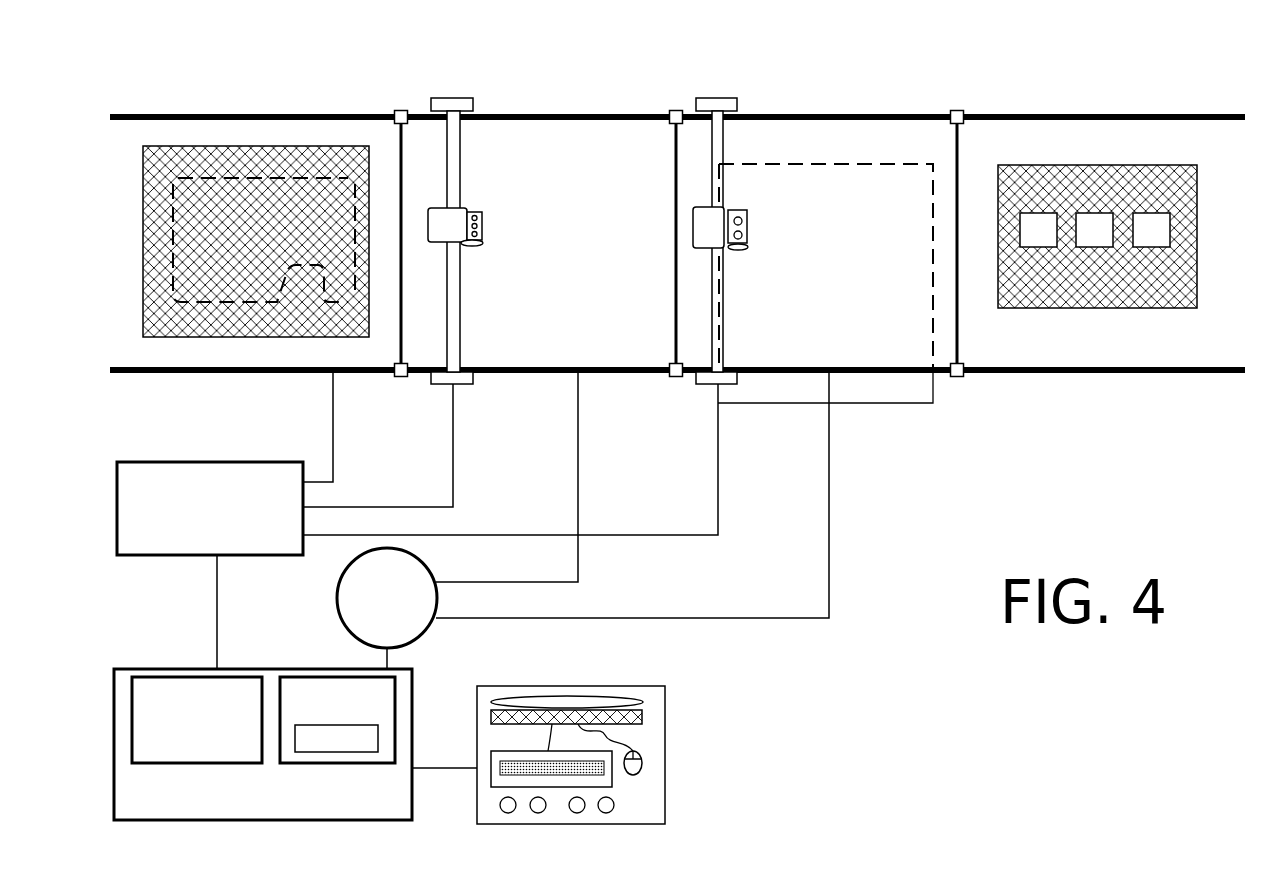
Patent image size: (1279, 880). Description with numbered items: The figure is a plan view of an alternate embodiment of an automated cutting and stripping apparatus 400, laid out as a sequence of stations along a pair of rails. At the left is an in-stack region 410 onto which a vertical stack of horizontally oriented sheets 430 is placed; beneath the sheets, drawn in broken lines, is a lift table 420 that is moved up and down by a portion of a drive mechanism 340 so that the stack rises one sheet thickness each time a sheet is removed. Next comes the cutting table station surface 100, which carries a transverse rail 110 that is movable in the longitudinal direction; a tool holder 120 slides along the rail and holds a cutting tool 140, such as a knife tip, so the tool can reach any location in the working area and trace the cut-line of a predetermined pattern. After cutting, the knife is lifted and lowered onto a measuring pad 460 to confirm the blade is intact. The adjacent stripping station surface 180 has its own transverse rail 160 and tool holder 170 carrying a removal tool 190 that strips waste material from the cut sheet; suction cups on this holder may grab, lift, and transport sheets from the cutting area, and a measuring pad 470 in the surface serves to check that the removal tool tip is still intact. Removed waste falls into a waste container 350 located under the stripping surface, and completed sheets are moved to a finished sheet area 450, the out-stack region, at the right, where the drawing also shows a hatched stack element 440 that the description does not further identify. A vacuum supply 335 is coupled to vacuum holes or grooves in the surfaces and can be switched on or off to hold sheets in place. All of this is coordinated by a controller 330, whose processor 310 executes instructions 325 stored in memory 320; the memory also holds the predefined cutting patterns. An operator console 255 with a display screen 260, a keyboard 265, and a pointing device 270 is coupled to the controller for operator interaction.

The cutting table station surface 100 is at (564, 234).
The transverse rail 110 is at (460, 288).
The tool holder 120 is at (446, 213).
The cutting tool 140 is at (483, 227).
The transverse rail 160 is at (727, 300).
The tool holder 170 is at (715, 205).
The stripping station surface 180 is at (909, 156).
The removal tool 190 is at (748, 231).
The operator console 255 is at (657, 697).
The display screen 260 is at (576, 712).
The keyboard 265 is at (514, 763).
The pointing device 270 is at (636, 752).
The processor 310 is at (180, 709).
The memory 320 is at (322, 717).
The instructions 325 is at (322, 747).
The controller 330 is at (366, 814).
The vacuum supply 335 is at (371, 576).
The drive mechanism 340 is at (194, 489).
The waste container 350 is at (891, 401).
The automated cutting and stripping apparatus 400 is at (897, 659).
The in-stack region 410 is at (349, 359).
The lift table 420 is at (243, 178).
The vertical stack of horizontally oriented sheets 430 is at (371, 161).
The unloading carrier 440 is at (1092, 165).
The finished sheet area 450 is at (1200, 373).
The measuring pad 460 is at (464, 246).
The measuring pad 470 is at (746, 248).